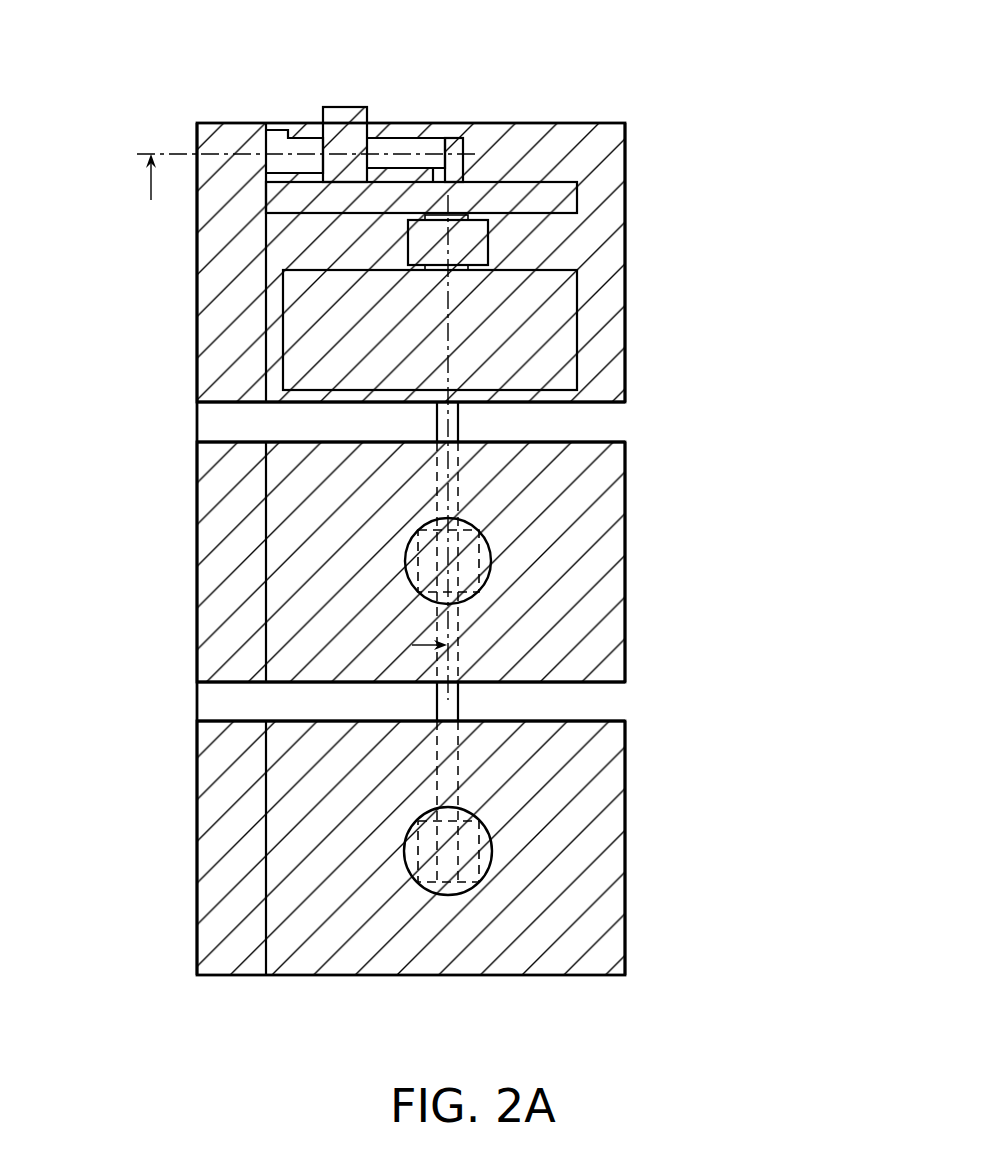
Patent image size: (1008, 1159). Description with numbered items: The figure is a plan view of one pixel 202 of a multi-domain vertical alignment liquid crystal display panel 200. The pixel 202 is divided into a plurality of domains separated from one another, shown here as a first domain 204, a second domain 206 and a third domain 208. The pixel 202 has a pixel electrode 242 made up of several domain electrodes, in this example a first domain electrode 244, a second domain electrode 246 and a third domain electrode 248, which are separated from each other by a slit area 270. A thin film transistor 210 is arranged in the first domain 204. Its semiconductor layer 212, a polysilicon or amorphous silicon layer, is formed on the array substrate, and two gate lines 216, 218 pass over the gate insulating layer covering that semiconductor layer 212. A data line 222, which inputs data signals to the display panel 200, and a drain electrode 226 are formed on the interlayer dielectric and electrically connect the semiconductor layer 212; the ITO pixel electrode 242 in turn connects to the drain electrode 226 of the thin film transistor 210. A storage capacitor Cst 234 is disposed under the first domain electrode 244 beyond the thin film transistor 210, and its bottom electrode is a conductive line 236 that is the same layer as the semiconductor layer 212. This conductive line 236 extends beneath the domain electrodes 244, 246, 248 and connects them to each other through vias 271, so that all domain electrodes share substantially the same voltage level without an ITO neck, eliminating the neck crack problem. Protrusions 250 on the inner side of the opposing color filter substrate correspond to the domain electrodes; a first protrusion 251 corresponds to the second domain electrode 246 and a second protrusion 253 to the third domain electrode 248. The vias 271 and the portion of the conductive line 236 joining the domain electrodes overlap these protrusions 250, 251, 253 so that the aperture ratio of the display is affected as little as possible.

The liquid crystal display panel 200 is at (98, 36).
The pixel 202 is at (767, 187).
The first domain 204 is at (625, 205).
The second domain 206 is at (625, 493).
The third domain 208 is at (625, 843).
The thin film transistor 210 is at (388, 100).
The semiconductor layer 212 is at (448, 138).
The gate line 216 is at (343, 107).
The gate line 218 is at (590, 172).
The data line 222 is at (196, 255).
The drain electrode 226 is at (486, 237).
The storage capacitor Cst 234 is at (563, 323).
The conductive line 236 is at (462, 423).
The pixel electrode 242 is at (853, 258).
The first domain electrode 244 is at (612, 290).
The second domain electrode 246 is at (598, 624).
The third domain electrode 248 is at (602, 940).
The protrusions 250 is at (89, 576).
The first protrusion 251 is at (405, 567).
The second protrusion 253 is at (410, 837).
The slit area 270 is at (385, 423).
The vias 271 is at (490, 557).